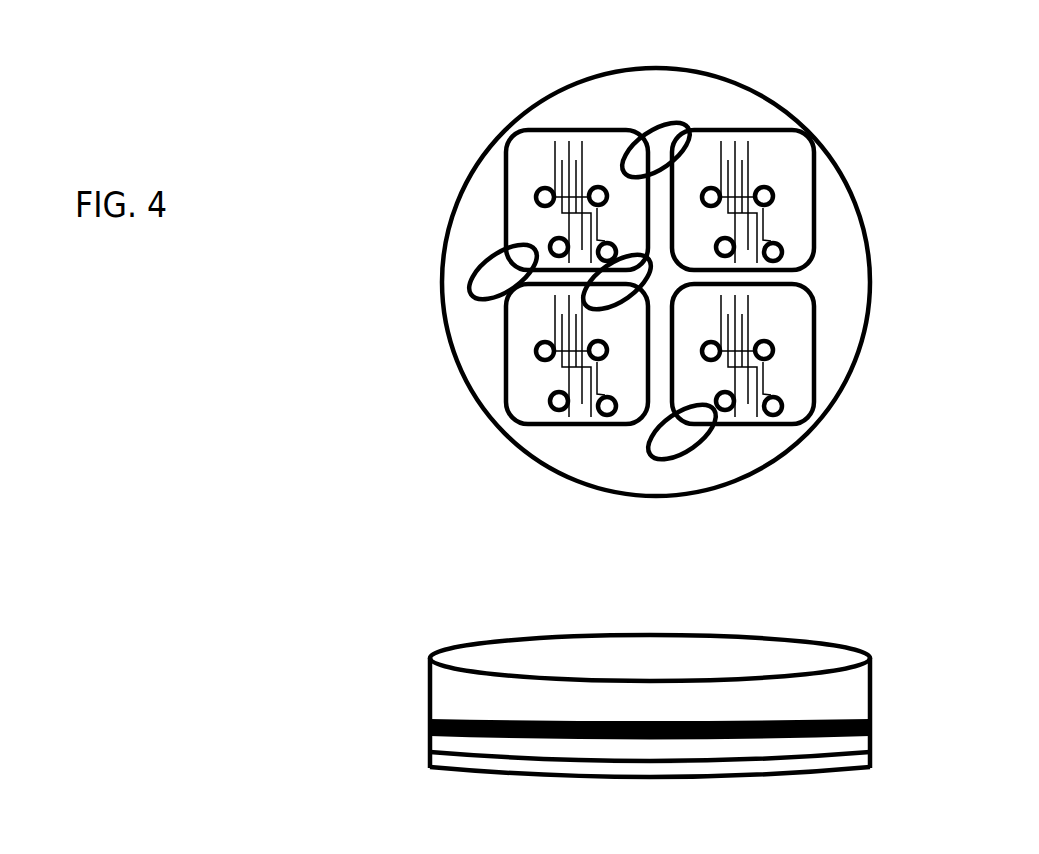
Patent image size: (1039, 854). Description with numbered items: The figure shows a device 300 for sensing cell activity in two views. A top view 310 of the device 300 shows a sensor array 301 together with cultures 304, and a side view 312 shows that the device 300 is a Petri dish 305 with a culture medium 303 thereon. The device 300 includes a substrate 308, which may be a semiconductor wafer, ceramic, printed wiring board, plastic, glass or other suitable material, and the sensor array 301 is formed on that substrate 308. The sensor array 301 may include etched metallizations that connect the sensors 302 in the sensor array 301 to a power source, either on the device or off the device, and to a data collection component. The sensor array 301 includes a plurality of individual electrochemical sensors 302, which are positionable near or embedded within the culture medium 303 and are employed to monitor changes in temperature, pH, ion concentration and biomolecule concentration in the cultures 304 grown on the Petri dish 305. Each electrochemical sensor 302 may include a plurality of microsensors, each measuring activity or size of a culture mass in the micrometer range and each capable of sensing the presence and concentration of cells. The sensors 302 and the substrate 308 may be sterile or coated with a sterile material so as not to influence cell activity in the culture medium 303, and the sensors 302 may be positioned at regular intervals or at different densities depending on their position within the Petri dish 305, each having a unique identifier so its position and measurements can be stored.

The top view 310 is at (387, 95).
The device 300 is at (808, 130).
The substrate 308 is at (838, 268).
The sensor array 301 is at (437, 127).
The electrochemical sensors 302 is at (775, 352).
The cultures 304 is at (483, 287).
The side view 312 is at (390, 623).
The Petri dish 305 is at (483, 693).
The culture medium 303 is at (445, 743).